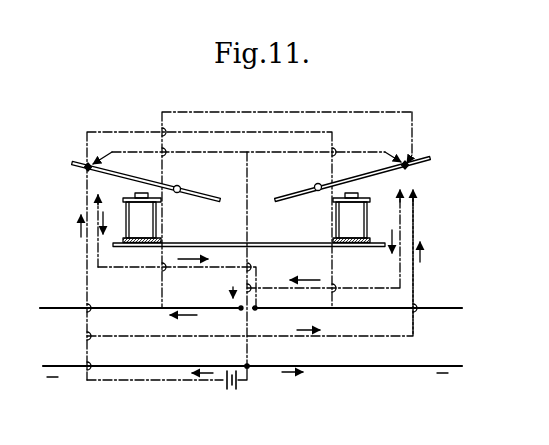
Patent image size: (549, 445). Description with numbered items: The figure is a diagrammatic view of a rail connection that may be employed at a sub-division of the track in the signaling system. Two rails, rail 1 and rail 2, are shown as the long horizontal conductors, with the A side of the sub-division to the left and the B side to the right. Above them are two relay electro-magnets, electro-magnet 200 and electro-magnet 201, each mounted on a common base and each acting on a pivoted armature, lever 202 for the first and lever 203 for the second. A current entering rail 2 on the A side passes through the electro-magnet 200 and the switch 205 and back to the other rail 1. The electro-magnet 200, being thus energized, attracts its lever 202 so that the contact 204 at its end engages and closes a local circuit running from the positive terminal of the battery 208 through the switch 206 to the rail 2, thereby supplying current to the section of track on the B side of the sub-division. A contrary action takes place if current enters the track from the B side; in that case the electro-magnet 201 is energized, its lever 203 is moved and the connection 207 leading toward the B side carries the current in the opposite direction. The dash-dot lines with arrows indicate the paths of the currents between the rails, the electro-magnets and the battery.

The rail 1 is at (420, 364).
The rail 2 is at (417, 308).
The electro-magnet 200 is at (157, 221).
The electro-magnet 201 is at (336, 222).
The lever 202 is at (146, 180).
The lever 203 is at (379, 172).
The contact 204 is at (88, 163).
The switch 205 is at (403, 161).
The switch 206 is at (96, 196).
The connection 207 is at (407, 190).
The battery 208 is at (249, 380).